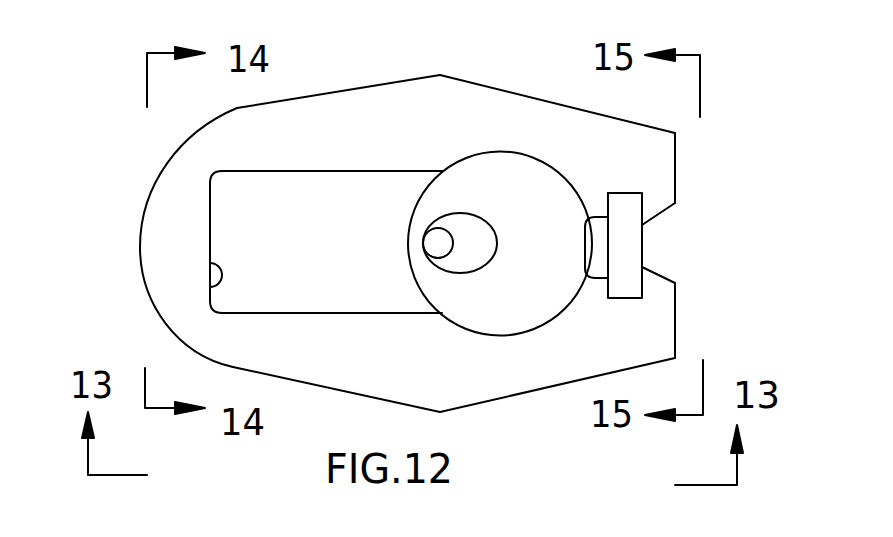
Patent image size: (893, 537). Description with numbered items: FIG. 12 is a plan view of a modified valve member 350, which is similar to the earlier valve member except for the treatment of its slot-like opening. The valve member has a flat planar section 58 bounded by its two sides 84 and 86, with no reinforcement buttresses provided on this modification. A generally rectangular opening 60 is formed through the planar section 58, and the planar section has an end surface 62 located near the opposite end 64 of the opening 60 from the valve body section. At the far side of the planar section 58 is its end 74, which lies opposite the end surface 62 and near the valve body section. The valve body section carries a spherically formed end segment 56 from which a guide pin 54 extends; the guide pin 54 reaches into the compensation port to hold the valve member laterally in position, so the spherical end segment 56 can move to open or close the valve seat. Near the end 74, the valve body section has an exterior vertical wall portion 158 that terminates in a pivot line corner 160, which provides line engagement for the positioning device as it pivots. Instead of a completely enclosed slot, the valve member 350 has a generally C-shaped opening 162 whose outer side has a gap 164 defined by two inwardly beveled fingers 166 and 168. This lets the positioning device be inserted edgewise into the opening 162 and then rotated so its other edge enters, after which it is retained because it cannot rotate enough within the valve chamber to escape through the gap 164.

The modified valve member 350 is at (177, 145).
The side of planar section 84 is at (348, 92).
The side of planar section 86 is at (488, 396).
The planar section 58 is at (290, 382).
The generally rectangular opening 60 is at (213, 215).
The end surface 62 is at (140, 250).
The opposite end of opening 64 is at (208, 288).
The guide pin 54 is at (447, 223).
The spherically formed end segment 56 is at (420, 270).
The end of planar section 74 is at (677, 157).
The pivot line corner 160 is at (607, 213).
The C-shaped opening 162 is at (623, 243).
The gap 164 is at (667, 263).
The inwardly beveled finger 166 is at (668, 204).
The inwardly beveled finger 168 is at (668, 290).
The exterior vertical wall portion 158 is at (618, 298).